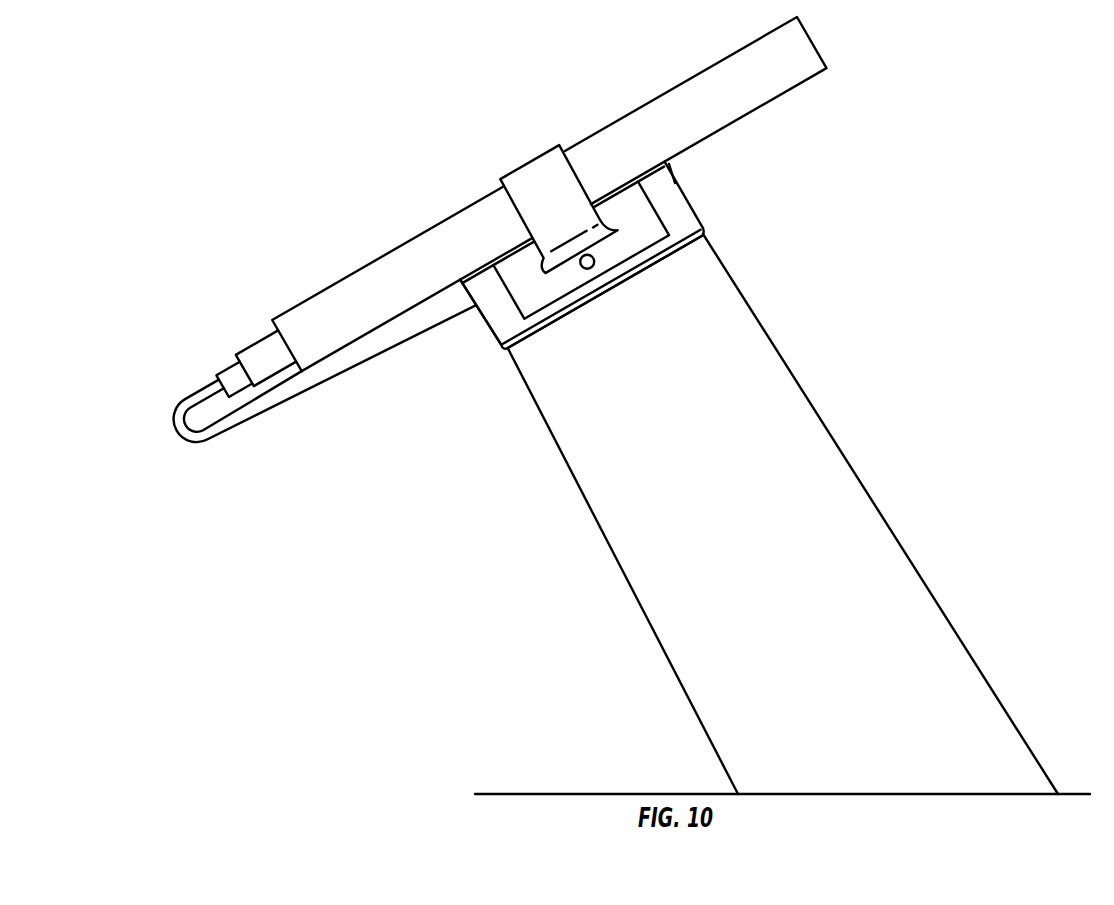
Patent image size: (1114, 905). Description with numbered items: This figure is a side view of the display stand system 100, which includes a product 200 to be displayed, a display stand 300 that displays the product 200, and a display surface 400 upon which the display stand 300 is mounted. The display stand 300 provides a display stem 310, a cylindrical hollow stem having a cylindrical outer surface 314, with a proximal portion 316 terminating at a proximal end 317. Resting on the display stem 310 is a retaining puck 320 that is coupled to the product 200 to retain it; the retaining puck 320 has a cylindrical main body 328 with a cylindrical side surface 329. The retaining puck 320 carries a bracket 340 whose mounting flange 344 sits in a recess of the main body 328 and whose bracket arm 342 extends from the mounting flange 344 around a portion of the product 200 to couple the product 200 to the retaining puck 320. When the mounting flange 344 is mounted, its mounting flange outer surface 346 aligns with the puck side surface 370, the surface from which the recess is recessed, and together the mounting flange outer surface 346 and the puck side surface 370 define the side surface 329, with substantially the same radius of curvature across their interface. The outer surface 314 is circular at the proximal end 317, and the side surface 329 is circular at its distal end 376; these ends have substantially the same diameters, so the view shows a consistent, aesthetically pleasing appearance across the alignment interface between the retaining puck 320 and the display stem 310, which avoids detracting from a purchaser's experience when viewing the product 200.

The display stand system 100 is at (303, 140).
The product 200 is at (792, 71).
The display stand 300 is at (766, 514).
The display stem 310 is at (942, 653).
The cylindrical outer surface 314 is at (915, 618).
The proximal portion 316 is at (509, 389).
The proximal end 317 is at (550, 328).
The retaining puck 320 is at (606, 281).
The cylindrical main body 328 is at (487, 292).
The cylindrical side surface 329 is at (498, 318).
The bracket 340 is at (545, 167).
The bracket arm 342 is at (574, 160).
The mounting flange 344 is at (617, 258).
The mounting flange outer surface 346 is at (647, 244).
The puck side surface 370 is at (673, 182).
The distal end 376 is at (684, 238).
The display surface 400 is at (553, 793).